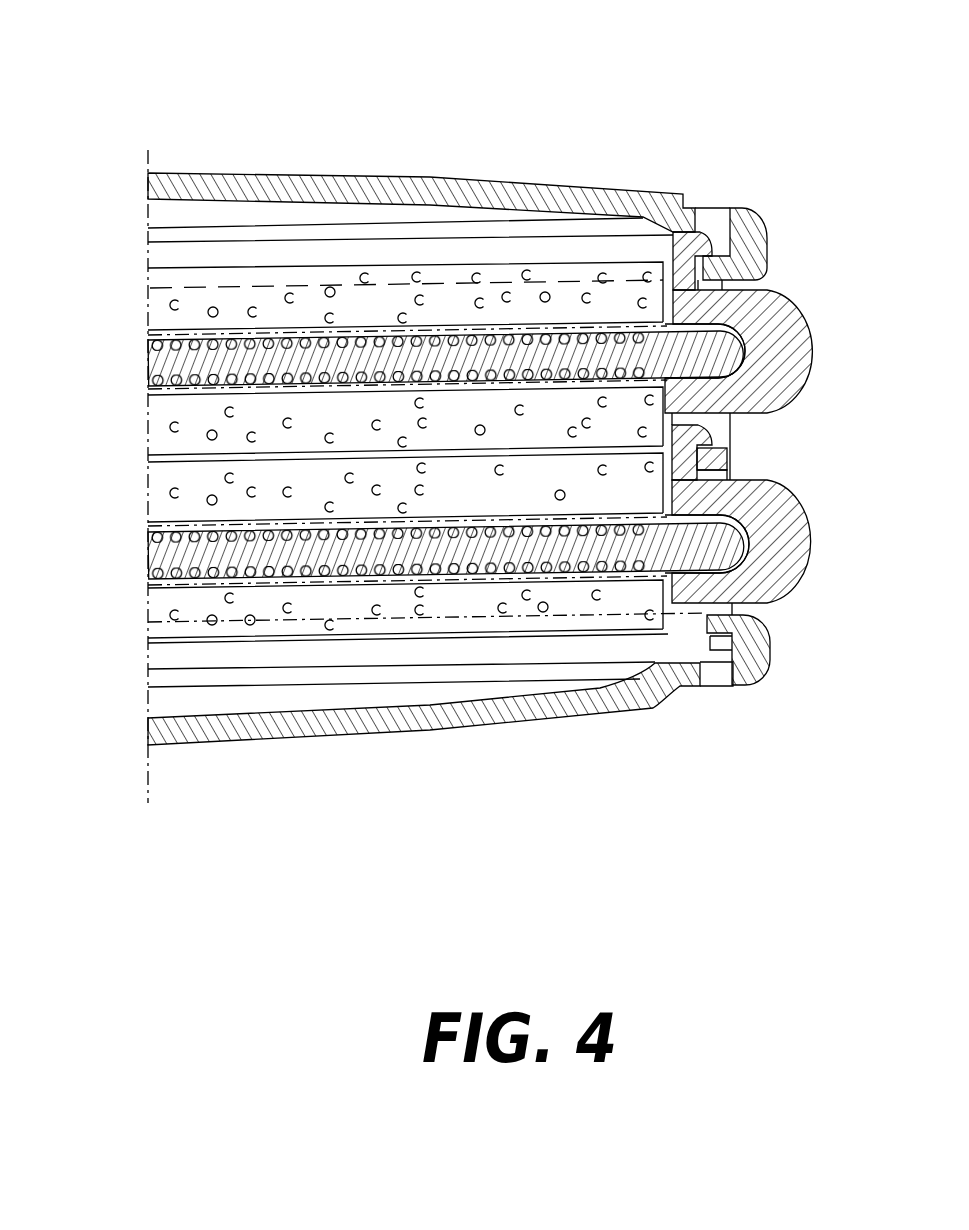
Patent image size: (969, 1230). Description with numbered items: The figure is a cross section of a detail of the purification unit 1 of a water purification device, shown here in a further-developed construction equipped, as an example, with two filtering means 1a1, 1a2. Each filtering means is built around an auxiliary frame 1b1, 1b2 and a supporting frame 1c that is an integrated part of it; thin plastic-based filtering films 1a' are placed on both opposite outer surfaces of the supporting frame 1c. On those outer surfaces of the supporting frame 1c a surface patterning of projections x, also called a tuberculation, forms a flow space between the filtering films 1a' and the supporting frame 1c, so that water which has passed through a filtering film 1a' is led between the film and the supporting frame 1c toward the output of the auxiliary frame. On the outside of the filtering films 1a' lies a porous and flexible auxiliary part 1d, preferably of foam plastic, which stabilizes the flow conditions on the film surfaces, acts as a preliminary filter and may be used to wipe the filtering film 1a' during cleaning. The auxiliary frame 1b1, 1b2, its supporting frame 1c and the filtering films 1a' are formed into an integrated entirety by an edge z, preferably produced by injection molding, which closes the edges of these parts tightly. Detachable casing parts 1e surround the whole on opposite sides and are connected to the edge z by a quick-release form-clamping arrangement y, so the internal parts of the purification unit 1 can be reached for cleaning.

The purification unit 1 is at (440, 107).
The first filtering means 1a1 is at (442, 291).
The second filtering means 1a2 is at (478, 610).
The filtering film 1a' is at (360, 406).
The first auxiliary frame 1b1 is at (692, 350).
The second auxiliary frame 1b2 is at (705, 538).
The supporting frame 1c is at (166, 382).
The auxiliary part 1d is at (292, 292).
The casing part 1e is at (616, 190).
The projections x is at (612, 325).
The form-clamping arrangement y is at (758, 206).
The edge z is at (785, 300).